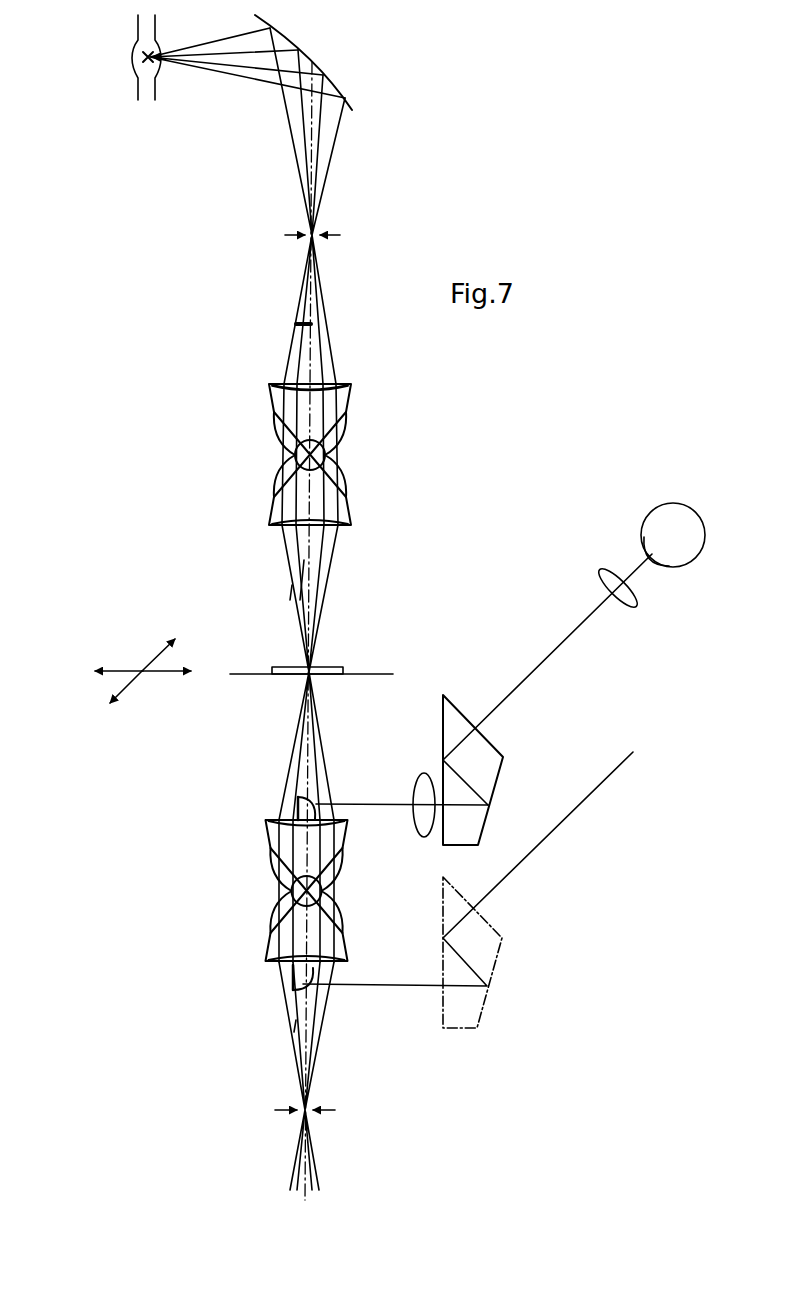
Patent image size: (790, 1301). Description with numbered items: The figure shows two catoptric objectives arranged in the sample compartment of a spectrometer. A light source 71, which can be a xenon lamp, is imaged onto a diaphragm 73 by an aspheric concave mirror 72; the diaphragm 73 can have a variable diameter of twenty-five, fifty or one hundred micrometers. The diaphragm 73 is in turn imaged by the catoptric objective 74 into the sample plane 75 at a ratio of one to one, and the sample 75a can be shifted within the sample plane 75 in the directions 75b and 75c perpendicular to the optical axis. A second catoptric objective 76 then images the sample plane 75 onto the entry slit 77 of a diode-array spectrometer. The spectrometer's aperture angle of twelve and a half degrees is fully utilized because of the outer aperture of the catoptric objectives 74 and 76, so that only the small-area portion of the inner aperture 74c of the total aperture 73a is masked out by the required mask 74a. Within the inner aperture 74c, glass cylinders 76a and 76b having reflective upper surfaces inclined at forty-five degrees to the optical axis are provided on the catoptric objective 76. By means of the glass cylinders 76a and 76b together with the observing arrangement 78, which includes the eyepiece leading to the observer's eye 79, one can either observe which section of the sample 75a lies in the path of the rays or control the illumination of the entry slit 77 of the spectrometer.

The light source 71 is at (128, 78).
The aspheric concave mirror 72 is at (325, 68).
The diaphragm 73 is at (326, 235).
The total aperture 73a is at (294, 325).
The catoptric objective 74 is at (257, 428).
The mask 74a is at (317, 392).
The inner aperture 74c is at (304, 571).
The sample plane 75 is at (253, 676).
The sample 75a is at (330, 667).
The direction of sample shift 75b is at (125, 668).
The oblique movement direction 75c is at (147, 656).
The second catoptric objective 76 is at (261, 874).
The glass cylinder 76a is at (295, 809).
The glass cylinder 76b is at (293, 978).
The entry slit 77 is at (320, 1110).
The observing arrangement 78 is at (576, 580).
The observer eye 79 is at (658, 521).